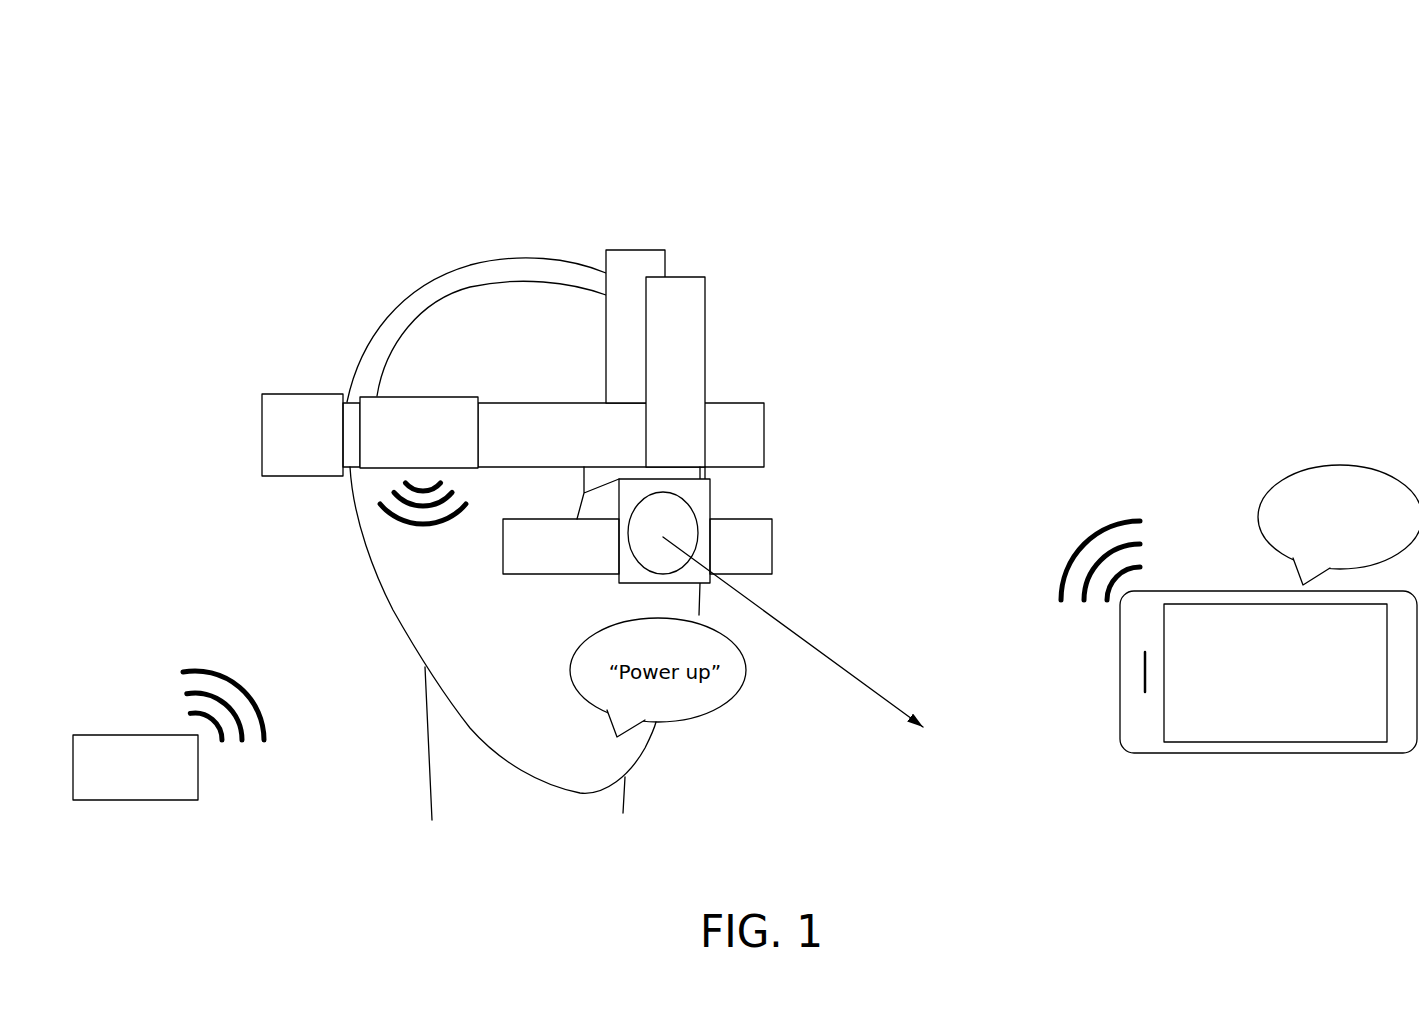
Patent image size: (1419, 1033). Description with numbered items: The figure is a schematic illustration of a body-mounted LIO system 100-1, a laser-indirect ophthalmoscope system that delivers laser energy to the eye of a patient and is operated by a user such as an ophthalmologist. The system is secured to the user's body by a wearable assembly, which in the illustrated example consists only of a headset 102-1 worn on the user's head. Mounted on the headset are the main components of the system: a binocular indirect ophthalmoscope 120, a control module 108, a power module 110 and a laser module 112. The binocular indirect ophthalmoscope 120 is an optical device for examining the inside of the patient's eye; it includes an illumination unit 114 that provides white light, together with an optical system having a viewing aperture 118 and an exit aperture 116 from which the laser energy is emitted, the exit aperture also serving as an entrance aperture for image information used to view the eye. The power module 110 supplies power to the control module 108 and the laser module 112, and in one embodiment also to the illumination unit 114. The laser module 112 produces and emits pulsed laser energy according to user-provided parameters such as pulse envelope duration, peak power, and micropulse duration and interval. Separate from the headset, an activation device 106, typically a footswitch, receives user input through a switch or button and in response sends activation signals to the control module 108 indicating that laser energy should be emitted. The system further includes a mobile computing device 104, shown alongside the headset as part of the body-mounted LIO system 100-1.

The body-mounted LIO system 100-1 is at (1200, 130).
The headset 102-1 is at (438, 270).
The mobile computing device 104 is at (1217, 591).
The activation device 106 is at (198, 800).
The control module 108 is at (360, 400).
The power module 110 is at (262, 437).
The laser module 112 is at (705, 295).
The illumination unit 114 is at (665, 263).
The exit aperture 116 is at (664, 562).
The viewing aperture 118 is at (503, 548).
The binocular indirect ophthalmoscope 120 is at (775, 535).